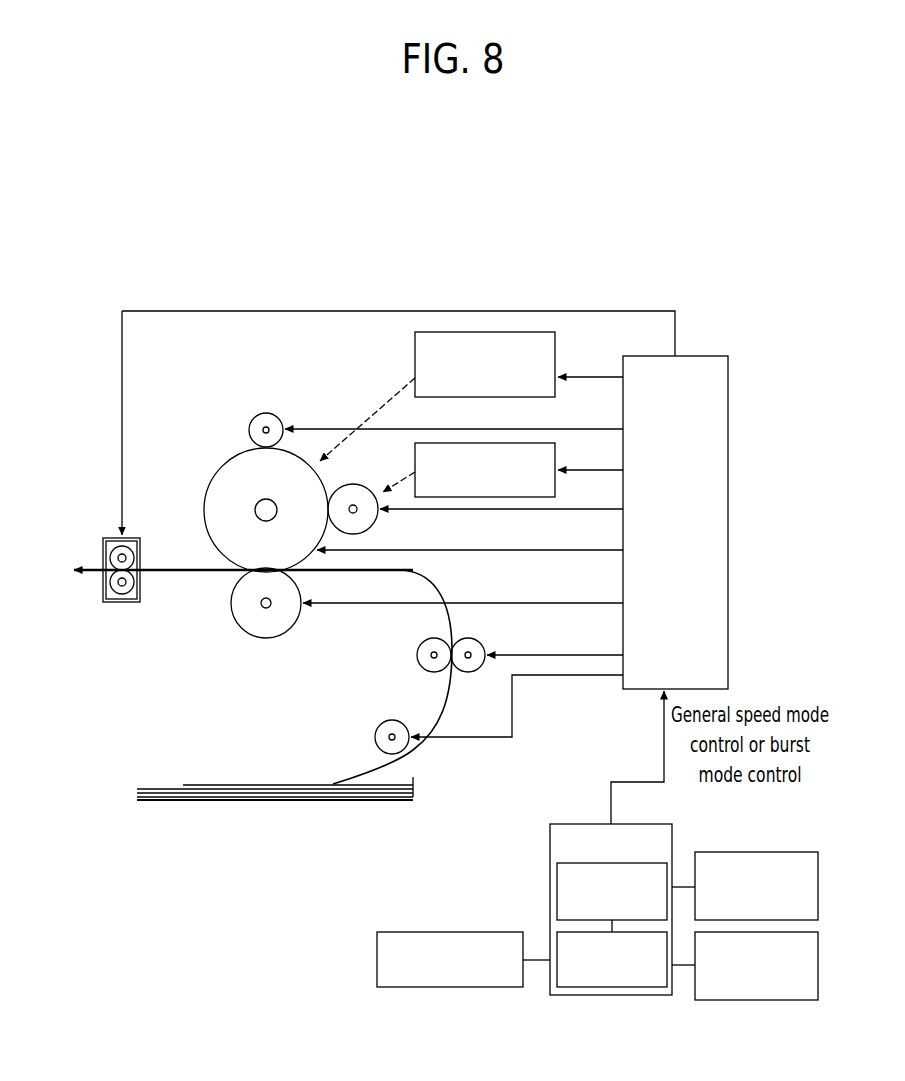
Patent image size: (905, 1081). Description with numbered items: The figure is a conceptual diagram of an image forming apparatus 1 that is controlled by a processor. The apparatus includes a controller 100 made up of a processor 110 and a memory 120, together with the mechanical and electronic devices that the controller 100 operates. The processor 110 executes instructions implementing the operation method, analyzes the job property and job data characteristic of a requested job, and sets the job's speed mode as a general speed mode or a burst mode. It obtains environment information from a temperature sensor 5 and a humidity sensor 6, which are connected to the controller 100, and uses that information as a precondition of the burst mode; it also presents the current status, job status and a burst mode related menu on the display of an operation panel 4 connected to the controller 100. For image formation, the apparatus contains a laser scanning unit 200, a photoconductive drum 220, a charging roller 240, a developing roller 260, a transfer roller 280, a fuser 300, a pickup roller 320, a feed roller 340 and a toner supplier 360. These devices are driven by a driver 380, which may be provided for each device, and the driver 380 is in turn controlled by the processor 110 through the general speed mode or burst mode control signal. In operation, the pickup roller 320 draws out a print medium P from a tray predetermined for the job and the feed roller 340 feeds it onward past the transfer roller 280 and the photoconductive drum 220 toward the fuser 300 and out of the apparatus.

The image forming apparatus 1 is at (455, 251).
The controller 100 is at (582, 823).
The processor 110 is at (557, 890).
The memory 120 is at (611, 989).
The laser scanning unit 200 is at (557, 388).
The photoconductive drum 220 is at (208, 481).
The charging roller 240 is at (249, 418).
The developing roller 260 is at (379, 521).
The transfer roller 280 is at (291, 631).
The fuser 300 is at (122, 605).
The pickup roller 320 is at (374, 729).
The feed roller 340 is at (417, 648).
The toner supplier 360 is at (557, 455).
The driver 380 is at (705, 356).
The operation panel 4 is at (438, 931).
The temperature sensor 5 is at (757, 851).
The humidity sensor 6 is at (757, 1001).
The print medium P is at (168, 785).